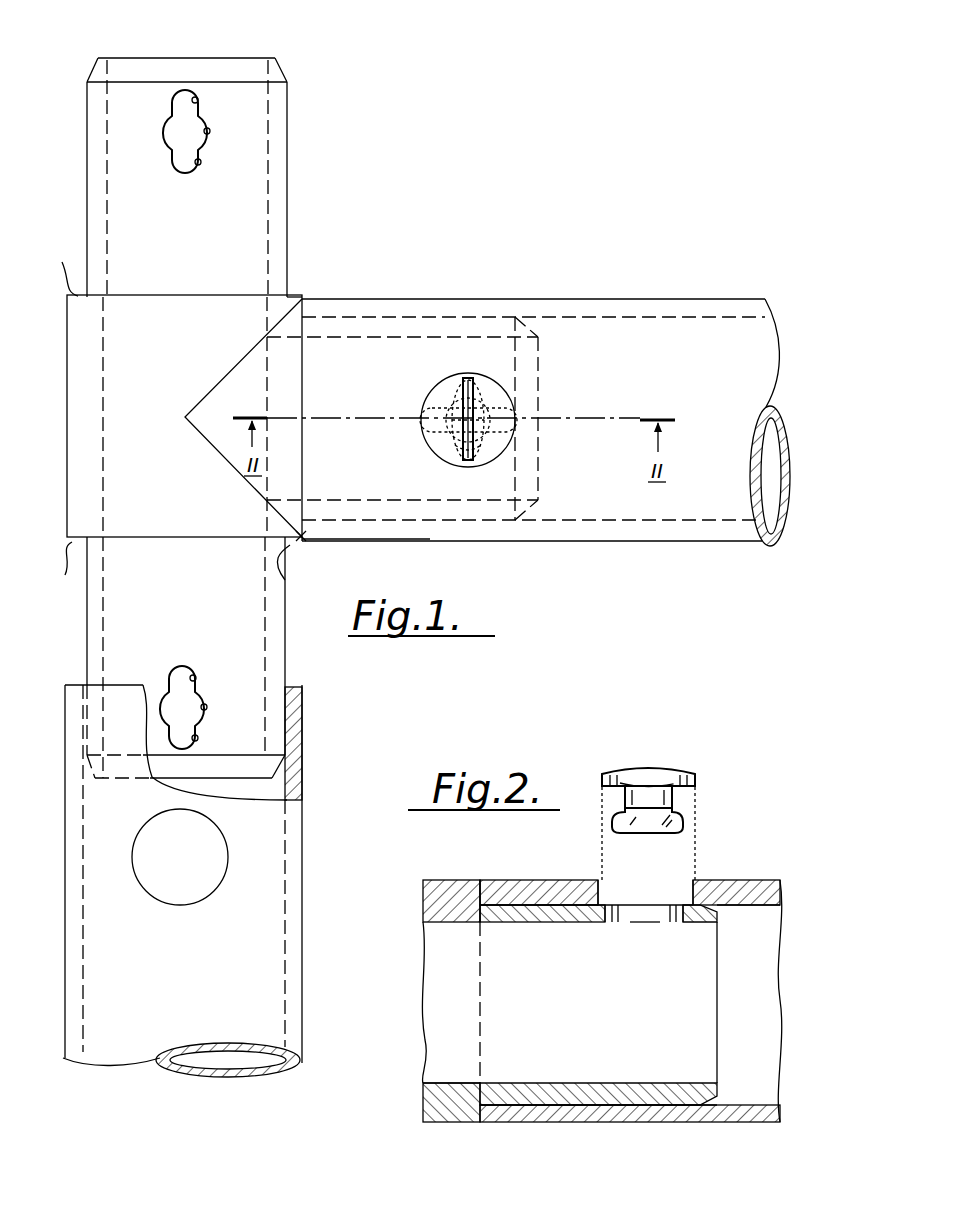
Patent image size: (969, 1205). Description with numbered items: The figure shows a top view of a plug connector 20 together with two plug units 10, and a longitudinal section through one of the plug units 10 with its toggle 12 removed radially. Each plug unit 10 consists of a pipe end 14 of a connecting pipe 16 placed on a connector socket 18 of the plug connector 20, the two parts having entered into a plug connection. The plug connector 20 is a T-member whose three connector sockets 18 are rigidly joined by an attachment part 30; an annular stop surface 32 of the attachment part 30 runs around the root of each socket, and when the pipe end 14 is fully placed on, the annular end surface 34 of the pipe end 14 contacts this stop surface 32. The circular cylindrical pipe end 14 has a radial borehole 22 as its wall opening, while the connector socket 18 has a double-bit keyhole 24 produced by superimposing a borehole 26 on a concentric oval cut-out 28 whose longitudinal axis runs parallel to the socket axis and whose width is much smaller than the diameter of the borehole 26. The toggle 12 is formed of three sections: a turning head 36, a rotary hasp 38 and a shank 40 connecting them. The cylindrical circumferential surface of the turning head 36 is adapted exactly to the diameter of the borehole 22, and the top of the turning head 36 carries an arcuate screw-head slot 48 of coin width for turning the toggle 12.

In FIG. 1, the plug unit 10 is at (487, 292).
In FIG. 2, the plug unit 10 is at (565, 872).
In FIG. 1, the toggle 12 is at (425, 440).
In FIG. 2, the toggle 12 is at (652, 763).
In FIG. 1, the pipe end 14 is at (428, 540).
In FIG. 2, the pipe end 14 is at (592, 1115).
In FIG. 1, the connecting pipe 16 is at (674, 296).
In FIG. 2, the connecting pipe 16 is at (752, 1125).
In FIG. 1, the connector socket 18 is at (283, 230).
In FIG. 2, the connector socket 18 is at (545, 922).
In FIG. 1, the plug connector 20 is at (297, 294).
In FIG. 2, the plug connector 20 is at (420, 1098).
In FIG. 1, the radial borehole 22 is at (430, 392).
In FIG. 2, the radial borehole 22 is at (683, 888).
In FIG. 1, the double-bit keyhole 24 is at (170, 172).
In FIG. 2, the double-bit keyhole 24 is at (650, 925).
In FIG. 1, the borehole 26 is at (210, 131).
In FIG. 2, the borehole 26 is at (645, 922).
In FIG. 1, the oval cut-out 28 is at (198, 101).
In FIG. 2, the oval cut-out 28 is at (615, 922).
In FIG. 1, the attachment part 30 is at (180, 548).
In FIG. 2, the attachment part 30 is at (423, 908).
In FIG. 1, the annular stop surface 32 is at (178, 420).
In FIG. 2, the annular stop surface 32 is at (480, 885).
In FIG. 1, the annular end surface 34 is at (305, 540).
In FIG. 2, the annular end surface 34 is at (490, 892).
In FIG. 1, the turning head 36 is at (492, 395).
In FIG. 2, the turning head 36 is at (670, 768).
In FIG. 1, the rotary hasp 38 is at (497, 450).
In FIG. 2, the rotary hasp 38 is at (683, 825).
In FIG. 1, the shank 40 is at (490, 415).
In FIG. 2, the shank 40 is at (672, 795).
In FIG. 1, the screw-head slot 48 is at (470, 380).